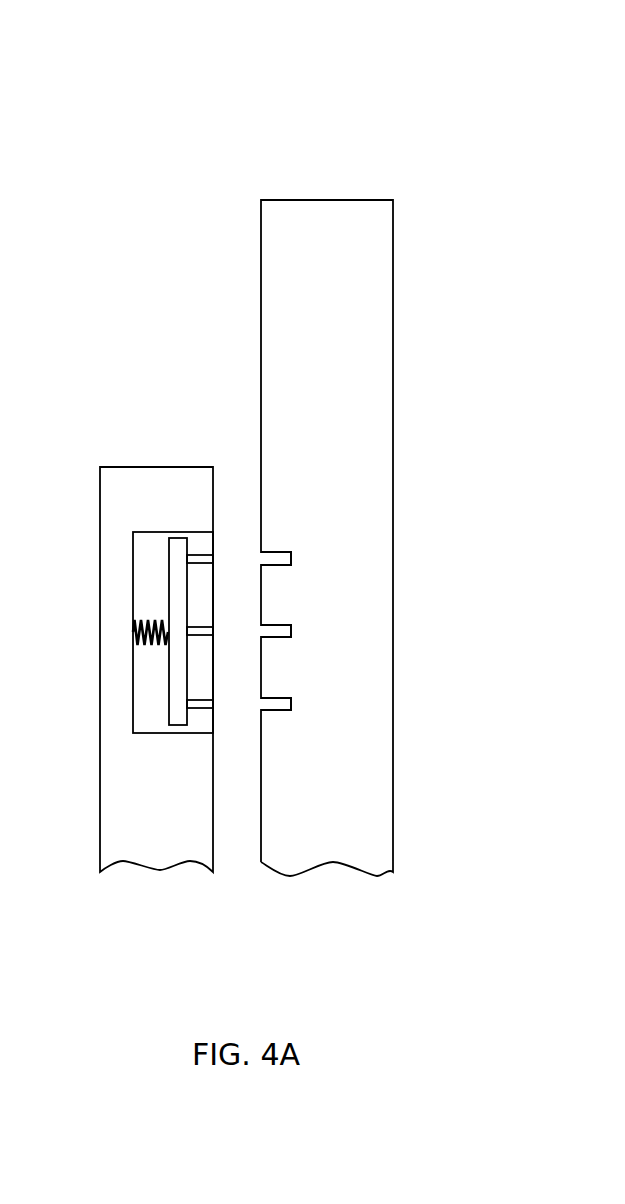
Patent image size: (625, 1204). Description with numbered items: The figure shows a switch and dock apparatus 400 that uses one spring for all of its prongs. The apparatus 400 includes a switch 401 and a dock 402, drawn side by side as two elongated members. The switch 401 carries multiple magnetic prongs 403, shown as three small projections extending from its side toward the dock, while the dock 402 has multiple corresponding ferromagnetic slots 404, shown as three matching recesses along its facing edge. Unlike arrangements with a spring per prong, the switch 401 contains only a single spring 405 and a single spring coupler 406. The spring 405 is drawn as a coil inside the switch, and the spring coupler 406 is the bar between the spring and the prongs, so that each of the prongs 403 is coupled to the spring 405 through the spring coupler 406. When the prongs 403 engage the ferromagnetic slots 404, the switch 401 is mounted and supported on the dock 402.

The apparatus 400 is at (148, 70).
The switch 401 is at (182, 847).
The dock 402 is at (352, 847).
The magnetic prongs 403 is at (212, 558).
The ferromagnetic slots 404 is at (291, 558).
The spring 405 is at (142, 620).
The spring coupler 406 is at (168, 556).